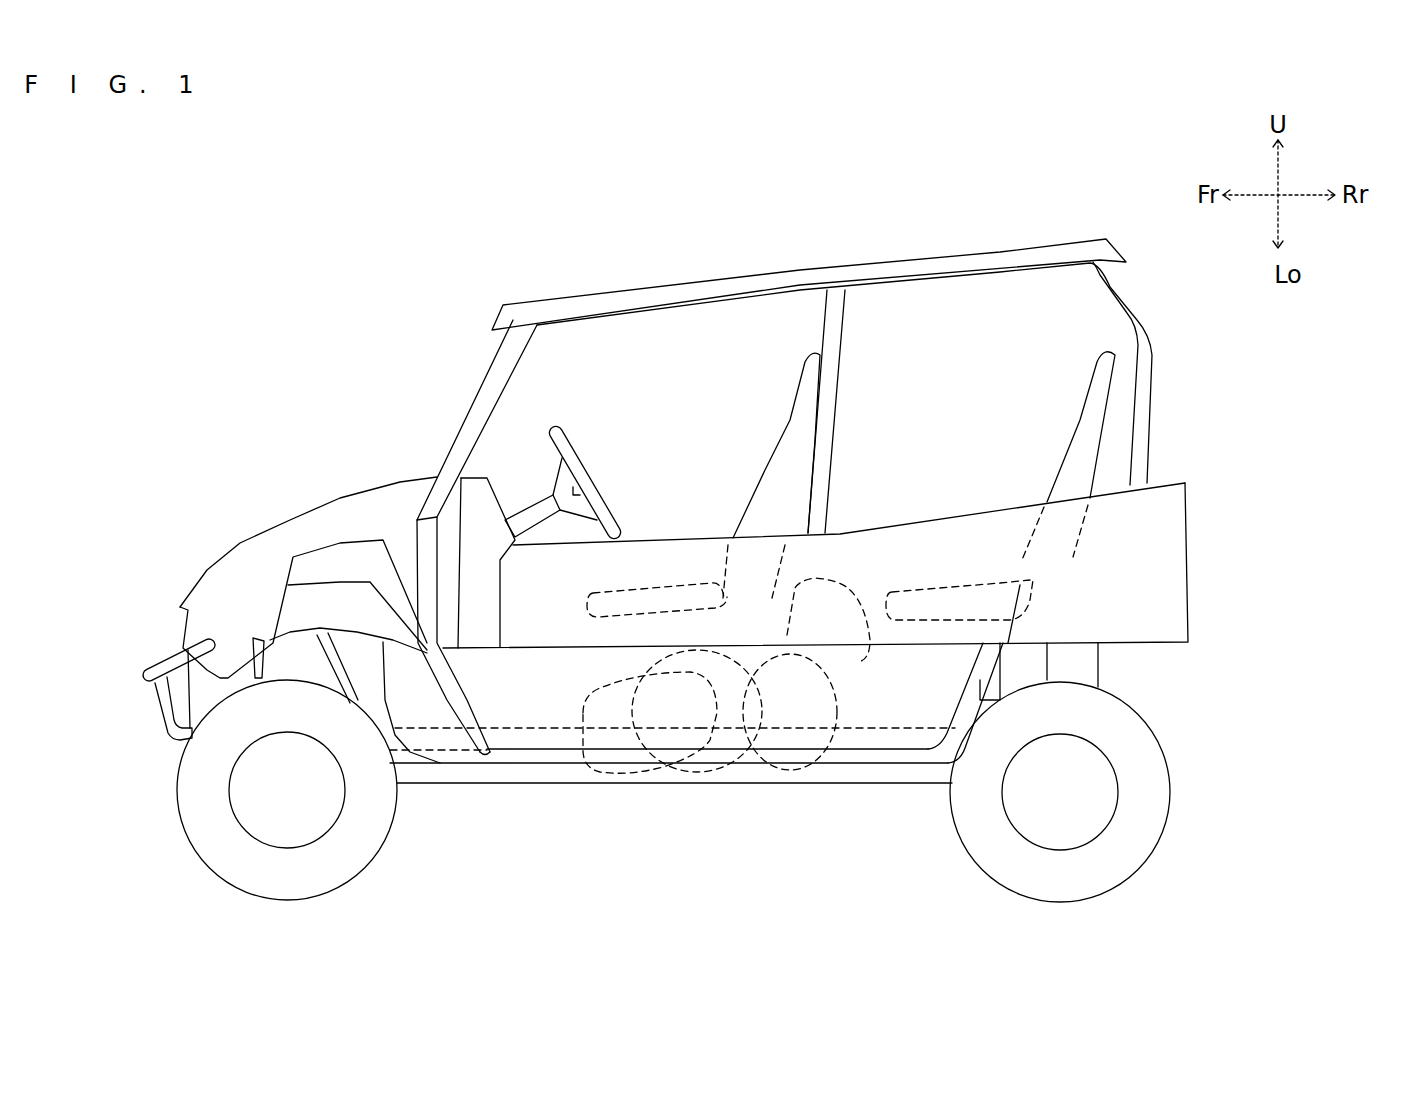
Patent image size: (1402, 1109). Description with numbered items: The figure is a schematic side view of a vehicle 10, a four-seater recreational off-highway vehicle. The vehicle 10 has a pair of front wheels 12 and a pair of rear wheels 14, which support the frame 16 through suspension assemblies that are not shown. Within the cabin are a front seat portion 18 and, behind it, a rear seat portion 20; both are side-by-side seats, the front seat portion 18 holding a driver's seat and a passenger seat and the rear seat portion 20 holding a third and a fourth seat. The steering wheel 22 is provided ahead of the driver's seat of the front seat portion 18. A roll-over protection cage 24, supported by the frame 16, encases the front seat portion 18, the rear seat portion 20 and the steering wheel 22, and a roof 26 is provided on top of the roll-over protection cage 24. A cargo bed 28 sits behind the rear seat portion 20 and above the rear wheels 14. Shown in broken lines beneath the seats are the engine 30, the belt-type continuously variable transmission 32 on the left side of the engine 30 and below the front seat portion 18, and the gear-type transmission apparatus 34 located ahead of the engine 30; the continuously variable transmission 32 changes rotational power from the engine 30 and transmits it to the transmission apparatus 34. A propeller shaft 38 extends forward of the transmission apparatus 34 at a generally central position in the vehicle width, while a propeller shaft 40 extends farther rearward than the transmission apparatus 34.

The vehicle 10 is at (143, 178).
The front wheels 12 is at (222, 885).
The rear wheels 14 is at (1133, 875).
The frame 16 is at (543, 783).
The front seat portion 18 is at (773, 447).
The rear seat portion 20 is at (1078, 425).
The steering wheel 22 is at (573, 445).
The roll-over protection cage 24 is at (462, 415).
The roof 26 is at (775, 280).
The cargo bed 28 is at (1168, 580).
The engine 30 is at (838, 608).
The continuously variable transmission 32 is at (753, 775).
The transmission apparatus 34 is at (623, 772).
The propeller shaft 38 is at (453, 740).
The propeller shaft 40 is at (914, 740).